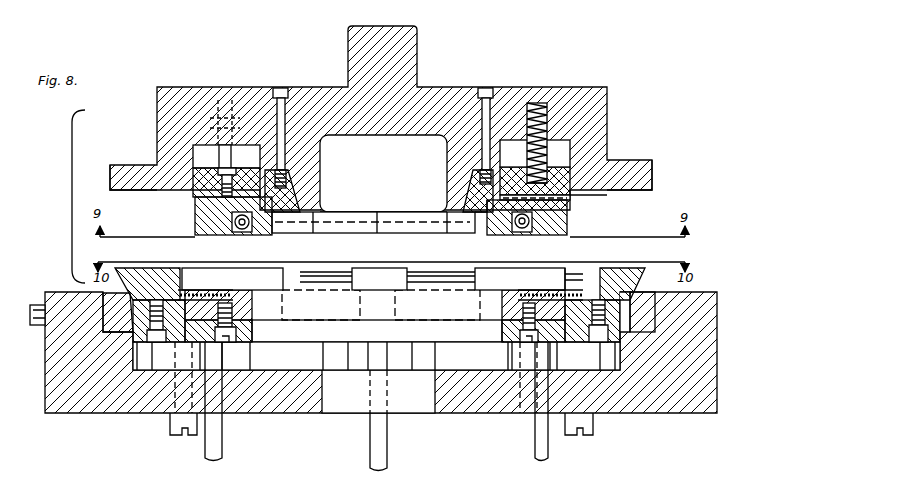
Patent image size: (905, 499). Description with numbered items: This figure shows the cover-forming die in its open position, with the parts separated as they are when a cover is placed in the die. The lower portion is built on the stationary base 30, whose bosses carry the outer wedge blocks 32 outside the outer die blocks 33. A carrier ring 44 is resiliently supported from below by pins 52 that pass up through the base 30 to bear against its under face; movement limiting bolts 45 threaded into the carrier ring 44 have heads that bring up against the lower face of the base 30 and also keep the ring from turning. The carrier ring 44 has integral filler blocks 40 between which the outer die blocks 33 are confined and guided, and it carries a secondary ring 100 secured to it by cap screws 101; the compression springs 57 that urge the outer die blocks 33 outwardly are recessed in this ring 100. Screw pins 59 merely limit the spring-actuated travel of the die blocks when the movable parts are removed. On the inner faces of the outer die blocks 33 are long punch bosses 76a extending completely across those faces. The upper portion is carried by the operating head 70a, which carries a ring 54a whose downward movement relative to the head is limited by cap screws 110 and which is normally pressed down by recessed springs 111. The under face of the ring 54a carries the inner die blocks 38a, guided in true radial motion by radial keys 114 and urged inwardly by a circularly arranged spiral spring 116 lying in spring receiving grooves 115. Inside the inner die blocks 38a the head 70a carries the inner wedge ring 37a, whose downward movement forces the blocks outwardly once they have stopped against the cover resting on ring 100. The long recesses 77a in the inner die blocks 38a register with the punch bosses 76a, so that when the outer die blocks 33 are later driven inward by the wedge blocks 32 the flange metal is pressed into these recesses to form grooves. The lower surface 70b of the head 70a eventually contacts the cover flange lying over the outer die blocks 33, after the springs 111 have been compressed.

The upper operating head 70a is at (430, 85).
The lower surface of head 70b is at (686, 184).
The bolts or cap screws 110 is at (222, 143).
The ring 54a is at (247, 165).
The recessed springs 111 is at (537, 103).
The inner wedge ring 37a is at (321, 176).
The inner die blocks 38a is at (586, 207).
The recesses or grooves 77a is at (584, 226).
The spring receiving grooves 115 is at (242, 230).
The spiral spring 116 is at (490, 225).
The radial keys 114 is at (613, 196).
The outer die blocks 33 is at (137, 275).
The filler blocks 40 is at (192, 268).
The compression spring 57 is at (226, 300).
The punch bosses 76a is at (320, 270).
The outer wedge blocks 32 is at (640, 292).
The screw pin 59 is at (130, 330).
The secondary ring 100 is at (377, 331).
The cap screws 101 is at (232, 336).
The base 30 is at (720, 358).
The carrier ring 44 is at (180, 345).
The movement limiting bolts 45 is at (172, 433).
The pins 52 is at (222, 451).